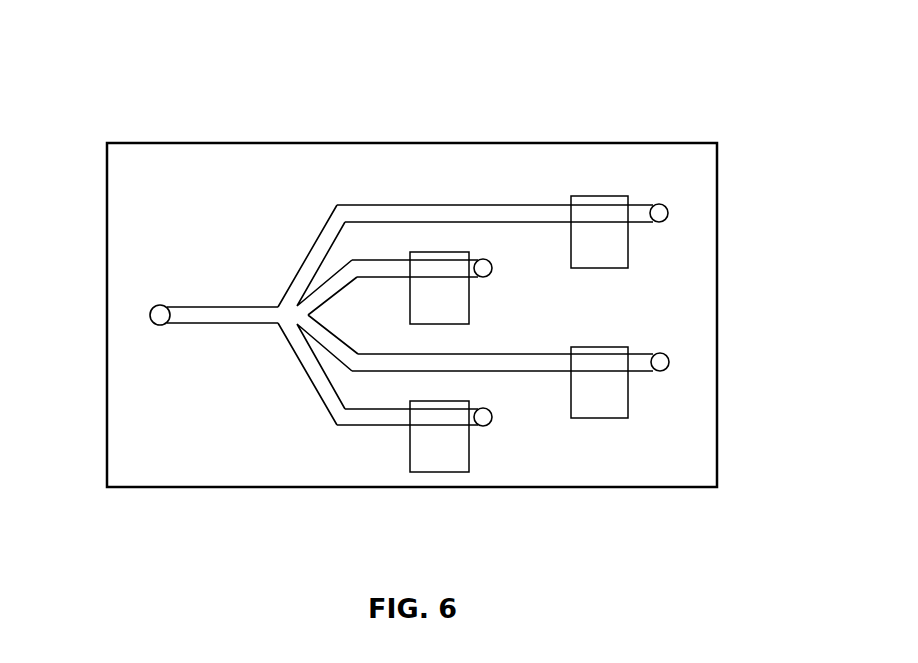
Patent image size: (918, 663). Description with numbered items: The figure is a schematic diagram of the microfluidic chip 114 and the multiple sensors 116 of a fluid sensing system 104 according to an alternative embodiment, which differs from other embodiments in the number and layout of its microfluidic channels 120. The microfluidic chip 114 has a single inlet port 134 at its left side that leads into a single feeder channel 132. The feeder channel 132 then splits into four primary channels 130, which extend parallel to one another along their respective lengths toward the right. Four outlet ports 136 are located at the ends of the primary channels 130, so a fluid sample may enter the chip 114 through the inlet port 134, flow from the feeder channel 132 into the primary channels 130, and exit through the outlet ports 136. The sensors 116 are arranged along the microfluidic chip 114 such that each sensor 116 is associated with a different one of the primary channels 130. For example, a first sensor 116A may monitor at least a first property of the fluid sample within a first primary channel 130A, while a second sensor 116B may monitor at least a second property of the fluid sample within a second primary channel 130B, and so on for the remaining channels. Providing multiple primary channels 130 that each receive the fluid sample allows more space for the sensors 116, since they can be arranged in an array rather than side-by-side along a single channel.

The fluid sensing system 104 is at (177, 44).
The microfluidic chip 114 is at (142, 142).
The sensors 116 is at (605, 405).
The first sensor 116A is at (605, 257).
The second sensor 116B is at (455, 305).
The microfluidic channels 120 is at (316, 388).
The primary channels 130 is at (442, 209).
The first primary channel 130A is at (488, 209).
The second primary channel 130B is at (375, 262).
The feeder channel 132 is at (225, 306).
The inlet port 134 is at (154, 307).
The outlet ports 136 is at (670, 215).